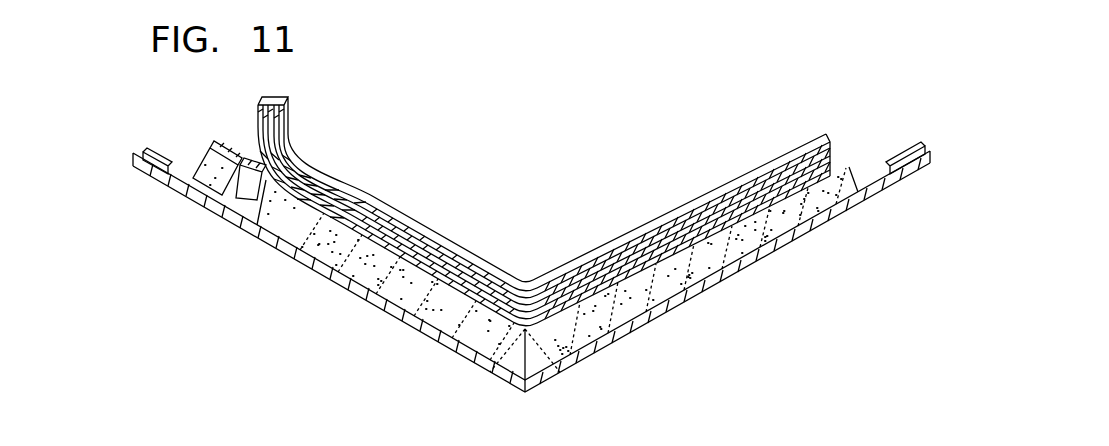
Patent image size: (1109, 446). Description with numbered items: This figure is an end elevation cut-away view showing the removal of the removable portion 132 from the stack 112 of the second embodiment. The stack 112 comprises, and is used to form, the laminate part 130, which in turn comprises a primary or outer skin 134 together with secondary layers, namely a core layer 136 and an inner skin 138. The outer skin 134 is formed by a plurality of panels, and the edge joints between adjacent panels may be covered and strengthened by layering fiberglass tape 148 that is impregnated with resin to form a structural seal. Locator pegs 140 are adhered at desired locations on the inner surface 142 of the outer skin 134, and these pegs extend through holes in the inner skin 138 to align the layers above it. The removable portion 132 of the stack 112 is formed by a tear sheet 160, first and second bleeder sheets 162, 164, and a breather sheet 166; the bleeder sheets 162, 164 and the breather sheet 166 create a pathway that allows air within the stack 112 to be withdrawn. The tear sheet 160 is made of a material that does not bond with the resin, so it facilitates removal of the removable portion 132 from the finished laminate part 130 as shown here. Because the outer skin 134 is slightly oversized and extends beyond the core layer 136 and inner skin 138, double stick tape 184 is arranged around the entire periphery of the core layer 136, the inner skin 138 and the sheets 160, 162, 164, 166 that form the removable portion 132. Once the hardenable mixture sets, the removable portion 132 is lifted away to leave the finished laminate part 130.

The stack 112 is at (795, 128).
The laminate part 130 is at (132, 102).
The removable portion 132 is at (257, 75).
The outer skin 134 is at (357, 290).
The core layer 136 is at (320, 250).
The inner skin 138 is at (318, 210).
The locator pegs 140 is at (215, 205).
The inner surface 142 is at (245, 215).
The fiberglass tape 148 is at (505, 362).
The tear sheet 160 is at (630, 272).
The first bleeder sheet 162 is at (655, 256).
The second bleeder sheet 164 is at (683, 236).
The breather sheet 166 is at (713, 202).
The double stick tape 184 is at (155, 168).